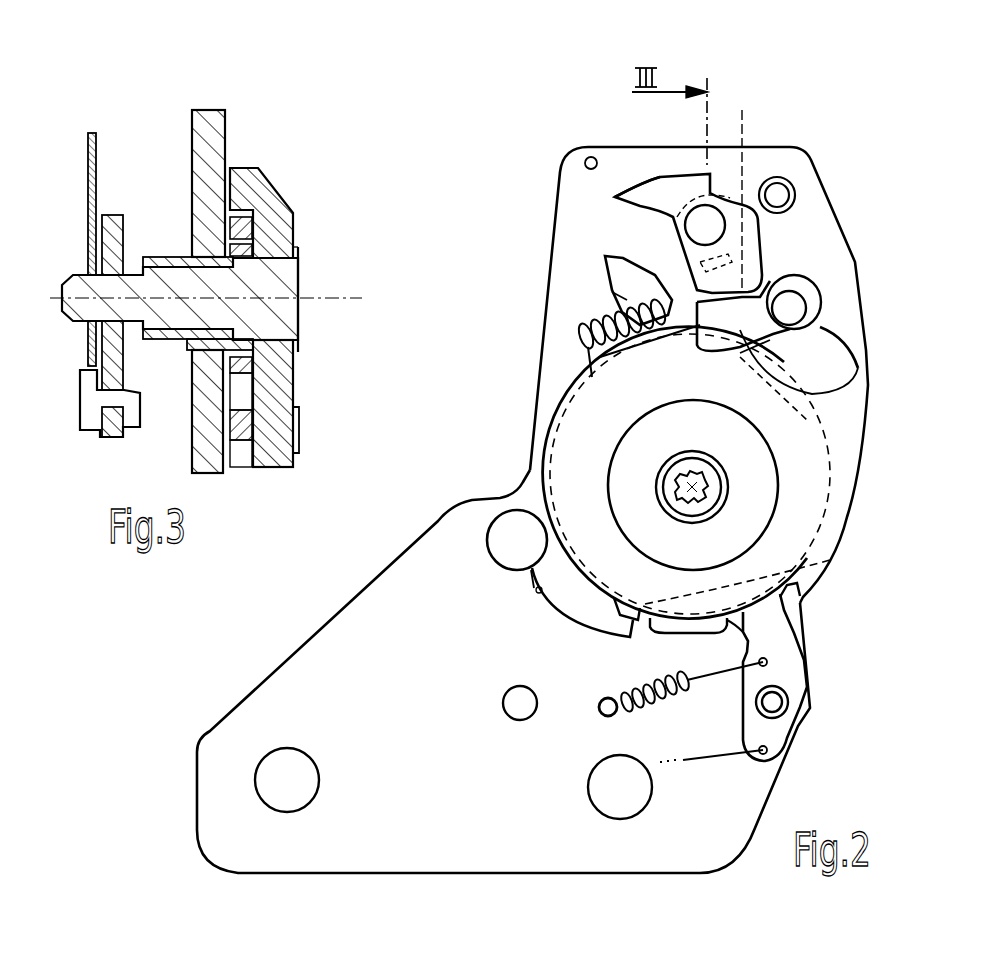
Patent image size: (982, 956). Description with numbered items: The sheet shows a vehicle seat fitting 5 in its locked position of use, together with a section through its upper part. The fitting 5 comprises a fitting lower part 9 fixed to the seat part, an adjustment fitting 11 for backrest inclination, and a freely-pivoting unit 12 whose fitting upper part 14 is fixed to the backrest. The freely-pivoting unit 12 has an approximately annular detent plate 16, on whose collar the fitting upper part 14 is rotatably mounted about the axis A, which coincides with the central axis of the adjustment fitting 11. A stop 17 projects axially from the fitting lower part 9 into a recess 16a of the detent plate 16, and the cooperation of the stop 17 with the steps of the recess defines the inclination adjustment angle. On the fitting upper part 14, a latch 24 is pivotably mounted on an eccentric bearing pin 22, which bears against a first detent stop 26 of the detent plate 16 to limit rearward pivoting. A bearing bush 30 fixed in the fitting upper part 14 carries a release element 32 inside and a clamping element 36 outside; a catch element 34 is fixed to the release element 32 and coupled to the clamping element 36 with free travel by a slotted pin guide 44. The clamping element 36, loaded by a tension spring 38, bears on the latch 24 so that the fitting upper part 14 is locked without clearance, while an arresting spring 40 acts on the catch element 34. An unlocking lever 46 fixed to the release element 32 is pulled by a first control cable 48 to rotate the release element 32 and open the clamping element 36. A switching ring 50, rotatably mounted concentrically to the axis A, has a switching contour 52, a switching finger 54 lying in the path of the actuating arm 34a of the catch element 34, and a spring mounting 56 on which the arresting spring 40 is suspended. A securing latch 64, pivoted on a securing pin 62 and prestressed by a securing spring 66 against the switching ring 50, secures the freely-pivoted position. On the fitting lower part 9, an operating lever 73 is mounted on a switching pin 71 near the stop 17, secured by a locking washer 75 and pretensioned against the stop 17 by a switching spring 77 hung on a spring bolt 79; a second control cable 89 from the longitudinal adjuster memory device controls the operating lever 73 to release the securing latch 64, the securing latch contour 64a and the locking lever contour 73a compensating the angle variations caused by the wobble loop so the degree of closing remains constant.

In FIG. 2, the fitting 5 is at (855, 601).
In FIG. 2, the fitting lower part 9 is at (352, 645).
In FIG. 2, the adjustment fitting 11 is at (755, 477).
In FIG. 2, the freely-pivoting unit 12 is at (548, 172).
In FIG. 3, the fitting upper part 14 is at (203, 153).
In FIG. 2, the fitting upper part 14 is at (583, 192).
In FIG. 2, the detent plate 16 is at (797, 528).
In FIG. 2, the recess 16a is at (755, 638).
In FIG. 2, the stop 17 is at (665, 635).
In FIG. 2, the bearing pin 22 is at (793, 310).
In FIG. 2, the latch 24 is at (830, 393).
In FIG. 2, the first detent stop 26 is at (817, 353).
In FIG. 3, the bearing bush 30 is at (190, 252).
In FIG. 3, the release element 32 is at (233, 287).
In FIG. 2, the release element 32 is at (705, 225).
In FIG. 3, the catch element 34 is at (267, 223).
In FIG. 2, the catch element 34 is at (745, 247).
In FIG. 2, the actuating arm 34a is at (630, 192).
In FIG. 3, the clamping element 36 is at (290, 367).
In FIG. 2, the clamping element 36 is at (758, 300).
In FIG. 2, the tension spring 38 is at (795, 188).
In FIG. 2, the arresting spring 40 is at (607, 325).
In FIG. 3, the slotted pin guide 44 is at (240, 397).
In FIG. 2, the slotted pin guide 44 is at (730, 260).
In FIG. 3, the unlocking lever 46 is at (123, 253).
In FIG. 3, the first control cable 48 is at (97, 157).
In FIG. 2, the first control cable 48 is at (745, 125).
In FIG. 2, the switching ring 50 is at (843, 428).
In FIG. 2, the switching contour 52 is at (790, 570).
In FIG. 2, the switching finger 54 is at (625, 272).
In FIG. 2, the spring mounting 56 is at (588, 347).
In FIG. 2, the securing pin 62 is at (515, 540).
In FIG. 2, the securing latch 64 is at (600, 623).
In FIG. 2, the securing latch contour 64a is at (643, 600).
In FIG. 2, the securing spring 66 is at (517, 590).
In FIG. 2, the switching pin 71 is at (780, 703).
In FIG. 2, the operating lever 73 is at (755, 640).
In FIG. 2, the locking lever contour 73a is at (748, 660).
In FIG. 2, the locking washer 75 is at (764, 713).
In FIG. 2, the switching spring 77 is at (658, 700).
In FIG. 2, the spring bolt 79 is at (608, 710).
In FIG. 2, the second control cable 89 is at (725, 768).
In FIG. 2, the axis A is at (700, 490).